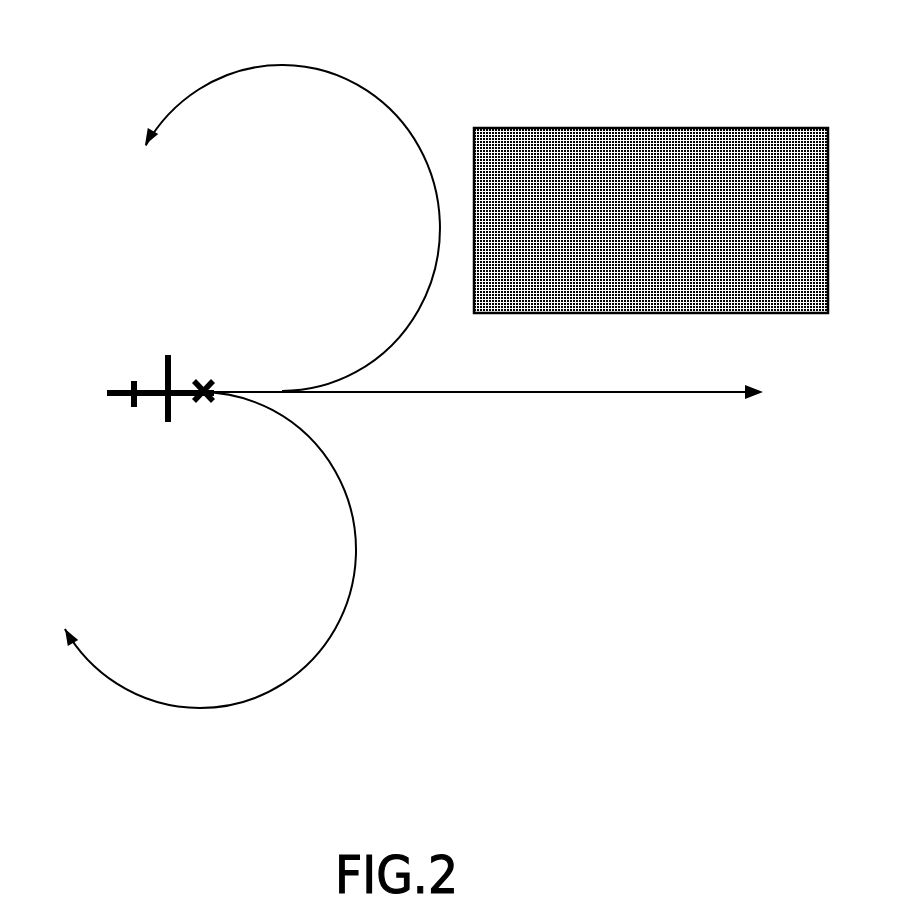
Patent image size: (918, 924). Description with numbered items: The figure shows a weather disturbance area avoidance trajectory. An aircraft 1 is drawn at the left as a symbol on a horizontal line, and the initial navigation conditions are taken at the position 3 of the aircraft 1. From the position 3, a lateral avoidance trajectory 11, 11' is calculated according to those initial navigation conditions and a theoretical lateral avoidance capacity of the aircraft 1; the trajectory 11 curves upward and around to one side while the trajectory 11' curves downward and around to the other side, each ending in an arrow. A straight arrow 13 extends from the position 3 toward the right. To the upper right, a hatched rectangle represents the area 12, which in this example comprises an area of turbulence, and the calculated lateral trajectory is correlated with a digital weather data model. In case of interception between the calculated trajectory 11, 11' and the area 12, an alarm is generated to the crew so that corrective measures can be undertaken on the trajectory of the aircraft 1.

The aircraft 1 is at (108, 372).
The position 3 is at (207, 375).
The lateral avoidance trajectory 11 is at (292, 199).
The lateral avoidance trajectory 11' is at (248, 550).
The area 12 is at (740, 117).
The direction of displacement 13 is at (640, 412).